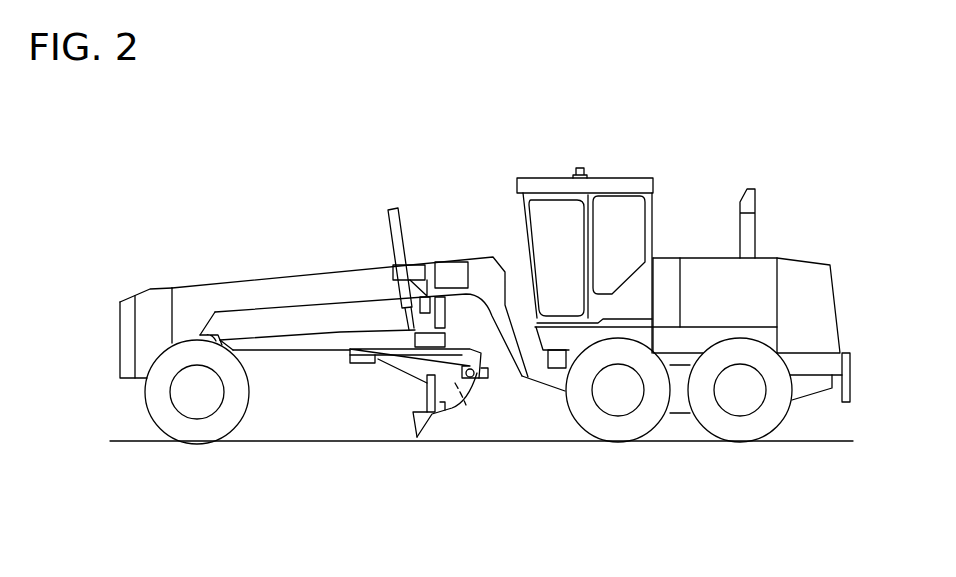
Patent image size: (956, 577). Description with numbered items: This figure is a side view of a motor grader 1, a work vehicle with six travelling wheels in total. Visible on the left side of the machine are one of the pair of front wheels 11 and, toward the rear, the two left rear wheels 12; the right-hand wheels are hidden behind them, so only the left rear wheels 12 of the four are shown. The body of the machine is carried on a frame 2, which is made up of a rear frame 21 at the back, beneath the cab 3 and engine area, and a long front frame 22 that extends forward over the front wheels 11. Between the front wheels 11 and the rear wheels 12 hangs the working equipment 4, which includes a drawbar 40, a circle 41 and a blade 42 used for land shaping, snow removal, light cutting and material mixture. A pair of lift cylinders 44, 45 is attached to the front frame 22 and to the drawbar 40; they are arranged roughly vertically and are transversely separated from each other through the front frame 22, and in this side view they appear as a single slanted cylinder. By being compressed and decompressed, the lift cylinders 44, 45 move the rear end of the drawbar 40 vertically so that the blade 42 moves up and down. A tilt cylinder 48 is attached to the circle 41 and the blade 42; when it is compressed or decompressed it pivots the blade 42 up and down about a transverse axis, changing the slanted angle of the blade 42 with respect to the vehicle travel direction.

The motor grader 1 is at (306, 164).
The frame 2 is at (478, 228).
The cab 3 is at (627, 180).
The working equipment 4 is at (372, 425).
The front wheel 11 is at (192, 432).
The rear wheel 12 is at (617, 432).
The rear frame 21 is at (808, 386).
The front frame 22 is at (277, 290).
The drawbar 40 is at (275, 350).
The circle 41 is at (356, 364).
The blade 42 is at (424, 417).
The lift cylinder 44 is at (396, 229).
The lift cylinder 45 is at (400, 213).
The tilt cylinder 48 is at (453, 381).